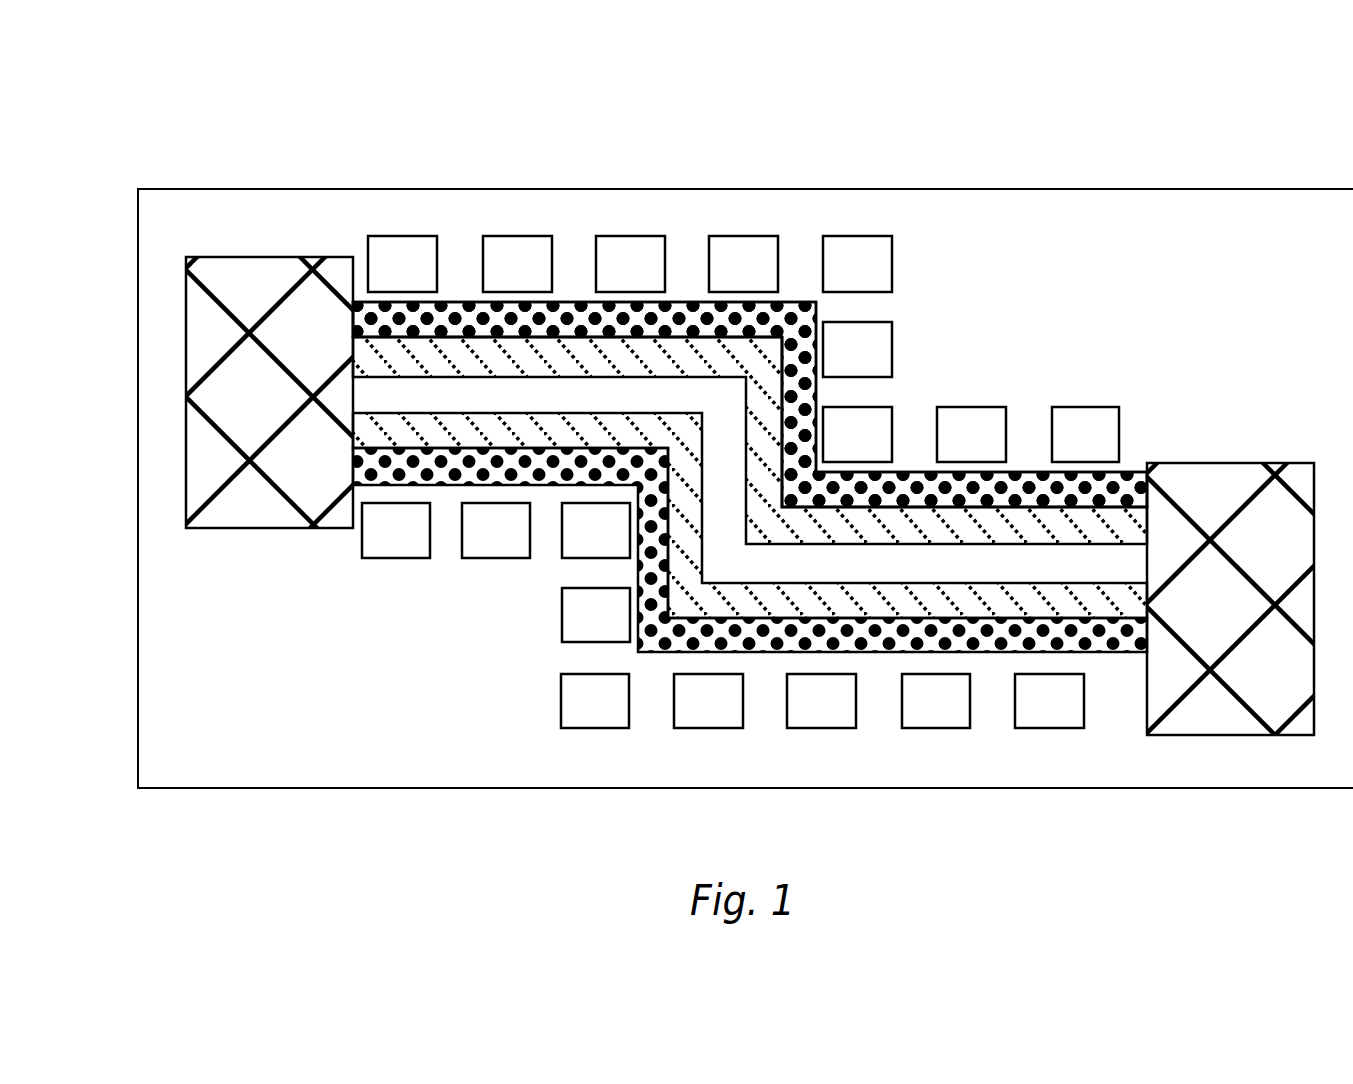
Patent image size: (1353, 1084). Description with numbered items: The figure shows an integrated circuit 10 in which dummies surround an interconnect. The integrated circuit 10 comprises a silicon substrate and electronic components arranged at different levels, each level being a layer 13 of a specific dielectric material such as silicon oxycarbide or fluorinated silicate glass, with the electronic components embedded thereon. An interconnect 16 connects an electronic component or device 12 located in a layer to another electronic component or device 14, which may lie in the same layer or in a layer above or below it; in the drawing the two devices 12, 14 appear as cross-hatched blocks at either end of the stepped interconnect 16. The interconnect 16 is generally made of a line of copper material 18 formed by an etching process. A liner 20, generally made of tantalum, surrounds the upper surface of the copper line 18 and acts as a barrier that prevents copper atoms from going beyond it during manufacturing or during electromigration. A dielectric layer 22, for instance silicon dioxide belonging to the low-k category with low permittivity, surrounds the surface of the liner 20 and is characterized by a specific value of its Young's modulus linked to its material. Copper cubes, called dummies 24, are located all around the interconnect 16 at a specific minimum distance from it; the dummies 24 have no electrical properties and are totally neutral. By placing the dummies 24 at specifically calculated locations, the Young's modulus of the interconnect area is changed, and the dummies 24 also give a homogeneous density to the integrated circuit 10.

The integrated circuit 10 is at (248, 189).
The electronic component or device 12 is at (186, 368).
The layer 13 is at (165, 225).
The electronic component or device 14 is at (1226, 735).
The interconnect 16 is at (802, 302).
The copper line 18 is at (663, 383).
The liner 20 is at (559, 355).
The dielectric layer 22 is at (450, 306).
The dummies 24 is at (892, 347).